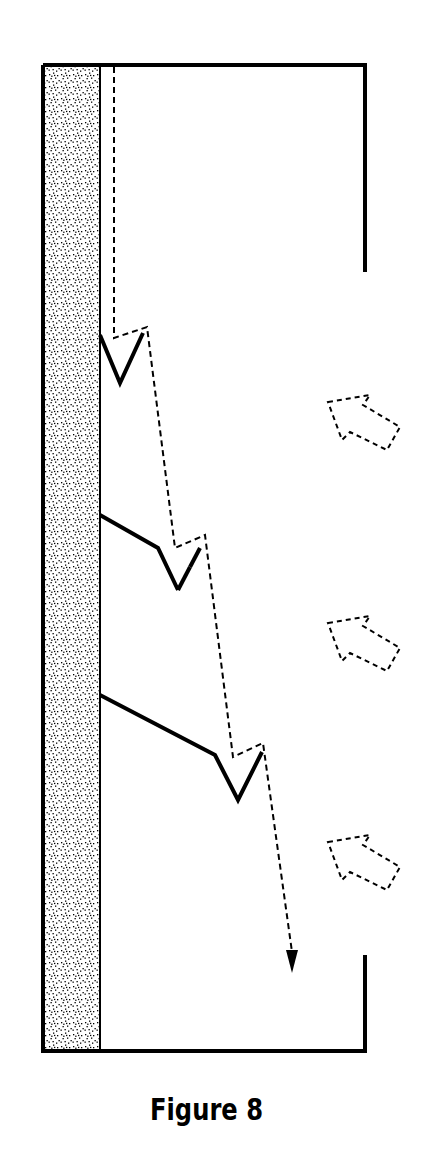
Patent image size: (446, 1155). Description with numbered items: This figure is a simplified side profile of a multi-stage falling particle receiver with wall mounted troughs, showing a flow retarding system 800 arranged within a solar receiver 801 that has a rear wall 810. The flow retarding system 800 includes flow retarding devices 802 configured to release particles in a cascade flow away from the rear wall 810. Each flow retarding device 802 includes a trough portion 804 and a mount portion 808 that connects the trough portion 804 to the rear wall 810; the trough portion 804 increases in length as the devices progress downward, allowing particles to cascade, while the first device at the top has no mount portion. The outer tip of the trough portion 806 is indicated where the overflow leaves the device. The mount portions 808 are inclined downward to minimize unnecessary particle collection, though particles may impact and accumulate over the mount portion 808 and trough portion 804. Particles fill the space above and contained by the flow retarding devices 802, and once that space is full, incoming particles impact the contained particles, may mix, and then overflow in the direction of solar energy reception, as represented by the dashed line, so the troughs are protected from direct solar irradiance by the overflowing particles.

The flow retarding system 800 is at (176, 318).
The solar receiver 801 is at (241, 65).
The flow retarding device 802 is at (191, 589).
The trough portion 804 is at (230, 590).
The fin tip 806 is at (203, 563).
The mount portion 808 is at (393, 403).
The rear wall 810 is at (101, 867).